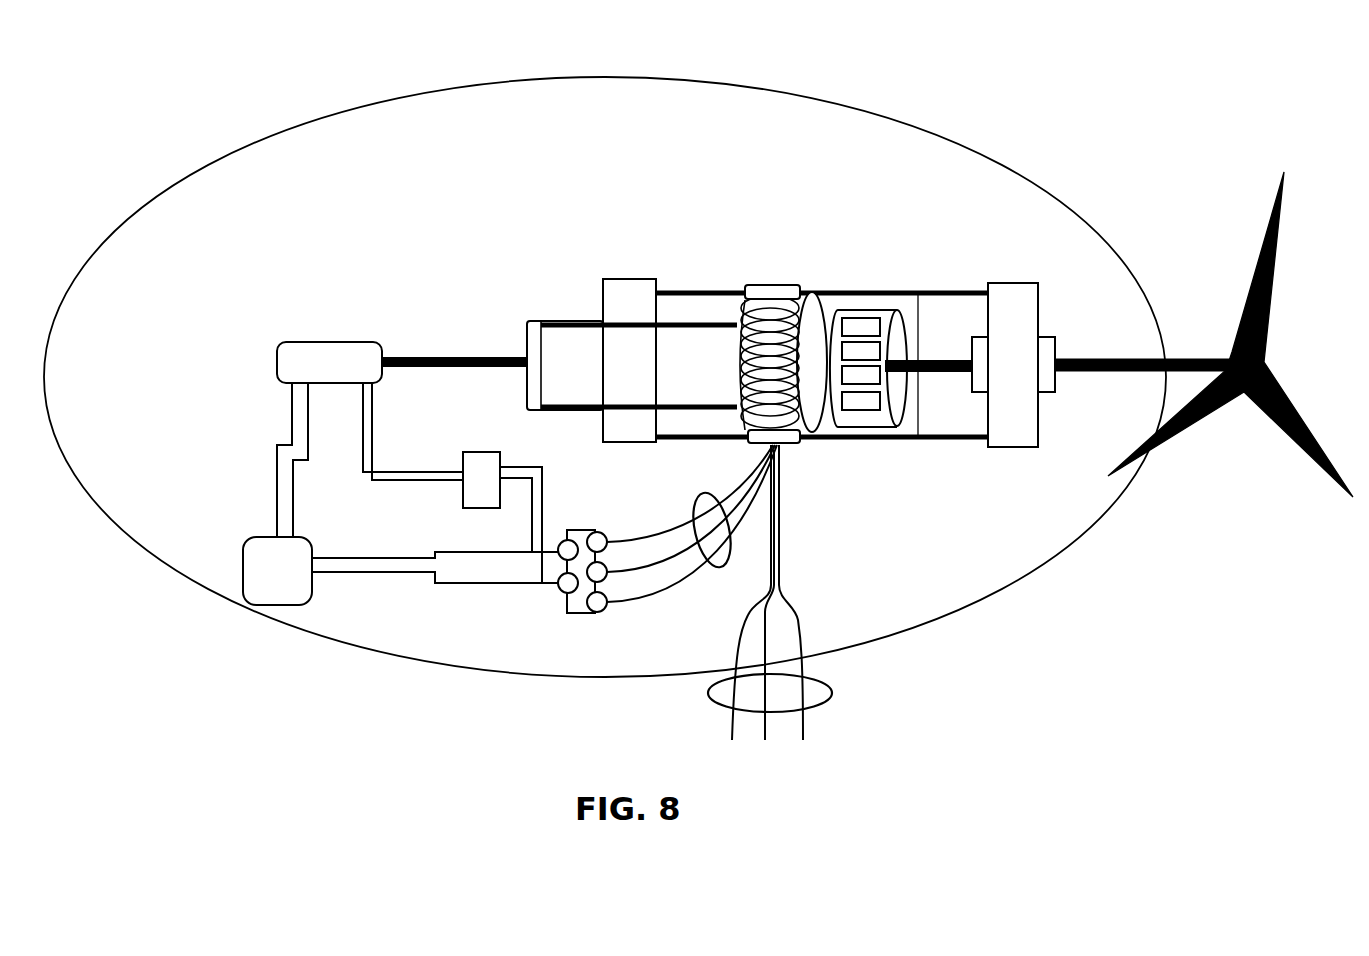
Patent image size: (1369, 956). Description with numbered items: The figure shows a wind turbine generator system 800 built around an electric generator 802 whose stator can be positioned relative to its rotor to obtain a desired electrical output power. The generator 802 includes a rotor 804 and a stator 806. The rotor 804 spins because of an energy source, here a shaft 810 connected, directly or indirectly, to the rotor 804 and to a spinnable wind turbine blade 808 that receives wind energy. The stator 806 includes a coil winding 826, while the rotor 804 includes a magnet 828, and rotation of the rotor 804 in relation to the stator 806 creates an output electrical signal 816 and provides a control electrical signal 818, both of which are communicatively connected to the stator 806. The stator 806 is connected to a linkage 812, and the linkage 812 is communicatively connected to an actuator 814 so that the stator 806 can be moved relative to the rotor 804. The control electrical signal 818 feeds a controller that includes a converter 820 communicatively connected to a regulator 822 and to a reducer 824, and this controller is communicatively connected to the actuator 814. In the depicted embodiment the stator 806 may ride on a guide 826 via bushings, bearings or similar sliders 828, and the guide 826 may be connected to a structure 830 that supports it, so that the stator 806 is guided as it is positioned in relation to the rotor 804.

The system 800 is at (984, 110).
The electric generator 802 is at (737, 80).
The rotor 804 is at (877, 310).
The stator 806 is at (810, 316).
The wind turbine blade 808 is at (1257, 263).
The shaft 810 is at (1114, 356).
The linkage 812 is at (546, 321).
The actuator 814 is at (295, 342).
The output electrical signal 816 is at (832, 690).
The control electrical signal 818 is at (701, 494).
The converter 820 is at (583, 613).
The regulator 822 is at (472, 452).
The reducer 824 is at (305, 537).
The coil winding 826 is at (748, 322).
The magnet 828 is at (758, 285).
The structure 830 is at (1012, 283).